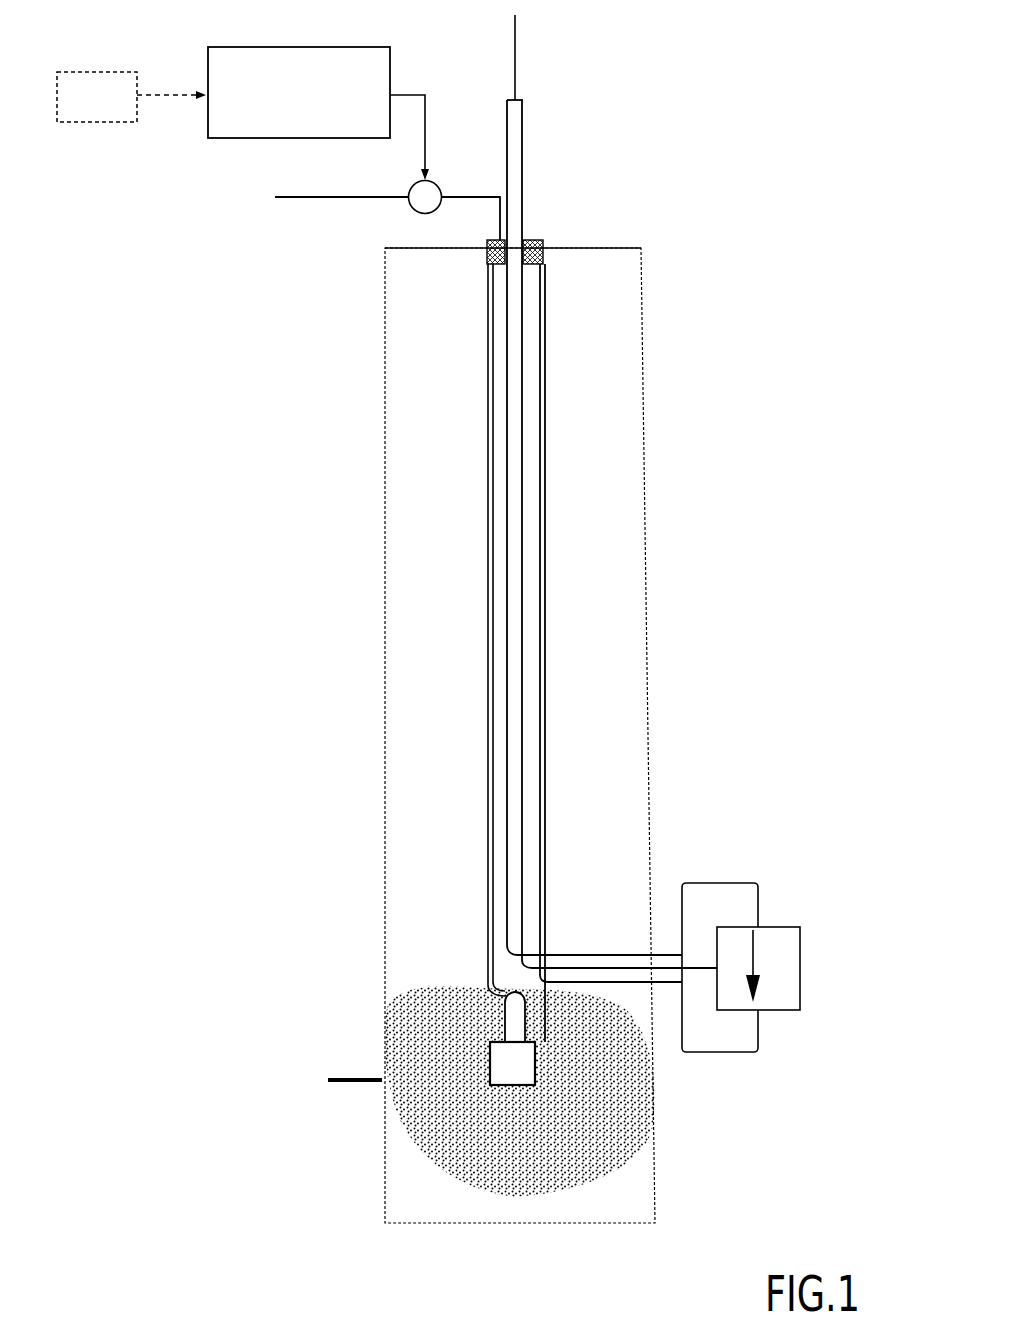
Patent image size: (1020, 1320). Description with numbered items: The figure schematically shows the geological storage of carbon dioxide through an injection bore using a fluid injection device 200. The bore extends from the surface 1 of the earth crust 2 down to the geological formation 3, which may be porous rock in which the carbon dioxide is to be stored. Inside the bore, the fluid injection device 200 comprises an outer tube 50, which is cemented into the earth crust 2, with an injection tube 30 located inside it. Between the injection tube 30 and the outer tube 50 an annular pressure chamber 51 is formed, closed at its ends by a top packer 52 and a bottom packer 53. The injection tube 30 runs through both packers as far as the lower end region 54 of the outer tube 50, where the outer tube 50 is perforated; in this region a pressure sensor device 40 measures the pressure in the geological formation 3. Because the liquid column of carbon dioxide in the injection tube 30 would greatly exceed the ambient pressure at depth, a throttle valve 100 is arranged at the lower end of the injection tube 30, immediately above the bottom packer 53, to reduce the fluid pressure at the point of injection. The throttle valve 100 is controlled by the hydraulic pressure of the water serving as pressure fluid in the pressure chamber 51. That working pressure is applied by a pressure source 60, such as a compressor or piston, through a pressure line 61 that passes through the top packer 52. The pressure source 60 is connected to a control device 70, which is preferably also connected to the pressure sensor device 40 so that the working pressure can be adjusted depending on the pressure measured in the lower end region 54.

The surface 1 is at (640, 248).
The earth crust 2 is at (625, 568).
The geological formation 3 is at (633, 1140).
The injection tube 30 is at (518, 723).
The pressure sensor device 40 is at (110, 110).
The outer tube 50 is at (544, 778).
The annular pressure chamber 51 is at (533, 670).
The top packer 52 is at (528, 258).
The bottom packer 53 is at (508, 997).
The lower end region 54 is at (332, 1084).
The pressure source 60 is at (394, 192).
The pressure line 61 is at (497, 213).
The control device 70 is at (363, 96).
The throttle valve 100 is at (870, 910).
The fluid injection device 200 is at (334, 461).